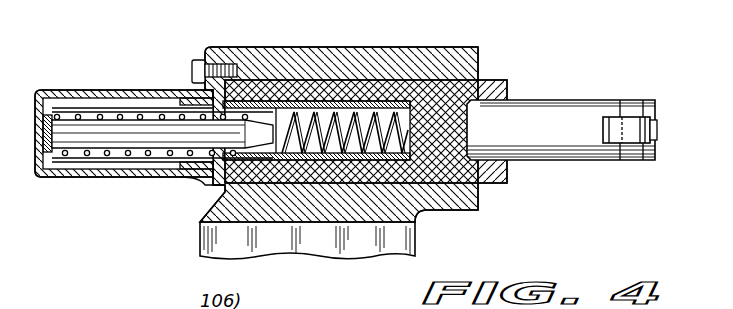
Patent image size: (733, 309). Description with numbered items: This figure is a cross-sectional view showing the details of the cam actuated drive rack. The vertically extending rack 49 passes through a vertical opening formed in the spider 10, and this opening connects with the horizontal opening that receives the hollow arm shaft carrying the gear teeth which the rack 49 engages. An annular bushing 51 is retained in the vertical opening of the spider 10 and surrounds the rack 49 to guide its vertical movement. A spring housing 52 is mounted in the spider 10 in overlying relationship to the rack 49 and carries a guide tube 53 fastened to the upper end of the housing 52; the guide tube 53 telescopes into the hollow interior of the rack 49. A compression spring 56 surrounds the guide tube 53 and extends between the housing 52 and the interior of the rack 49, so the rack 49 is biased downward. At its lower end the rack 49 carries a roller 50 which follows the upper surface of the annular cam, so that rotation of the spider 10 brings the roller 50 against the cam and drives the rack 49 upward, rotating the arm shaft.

The spider 10 is at (302, 58).
The annular bushing 51 is at (417, 88).
The spring housing 52 is at (137, 62).
The guide tube 53 is at (65, 132).
The spring 56 is at (327, 123).
The rack 49 is at (563, 117).
The roller 50 is at (650, 132).